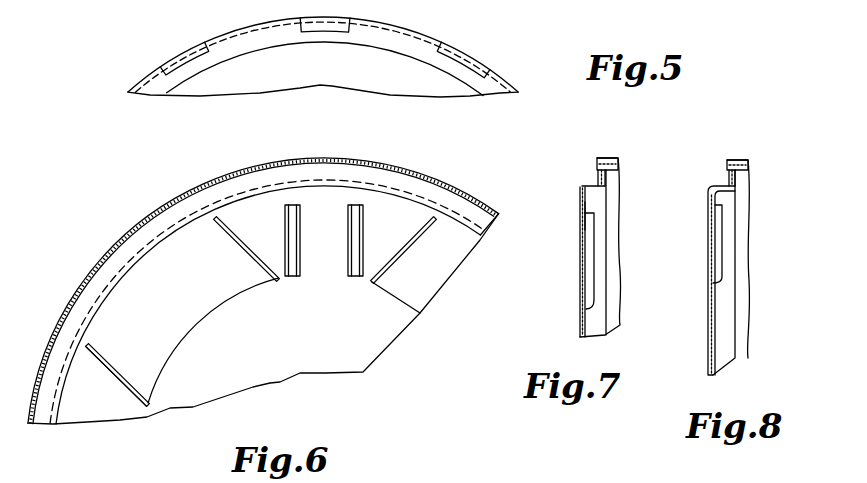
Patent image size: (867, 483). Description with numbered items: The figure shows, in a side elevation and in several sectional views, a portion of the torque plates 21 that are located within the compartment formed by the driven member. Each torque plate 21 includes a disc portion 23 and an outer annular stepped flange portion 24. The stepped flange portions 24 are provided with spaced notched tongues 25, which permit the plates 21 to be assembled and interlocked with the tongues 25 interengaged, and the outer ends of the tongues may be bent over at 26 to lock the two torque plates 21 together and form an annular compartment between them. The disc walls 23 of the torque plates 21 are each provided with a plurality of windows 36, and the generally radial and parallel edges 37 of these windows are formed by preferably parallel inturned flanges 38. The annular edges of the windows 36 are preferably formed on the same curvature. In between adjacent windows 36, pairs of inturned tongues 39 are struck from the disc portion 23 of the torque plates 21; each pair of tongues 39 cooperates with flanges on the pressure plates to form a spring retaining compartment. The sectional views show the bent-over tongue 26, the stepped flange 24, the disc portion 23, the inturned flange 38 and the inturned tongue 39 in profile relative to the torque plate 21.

In FIG. 5, the torque plate 21 is at (392, 95).
In FIG. 6, the torque plate 21 is at (202, 398).
In FIG. 7, the torque plate 21 is at (622, 243).
In FIG. 8, the torque plate 21 is at (750, 247).
In FIG. 5, the disc portion 23 is at (268, 78).
In FIG. 7, the disc portion 23 is at (580, 332).
In FIG. 8, the disc portion 23 is at (708, 342).
In FIG. 5, the outer annular stepped flange portion 24 is at (223, 60).
In FIG. 6, the outer annular stepped flange portion 24 is at (407, 200).
In FIG. 7, the outer annular stepped flange portion 24 is at (595, 176).
In FIG. 5, the notched tongue 25 is at (263, 20).
In FIG. 6, the notched tongue 25 is at (176, 195).
In FIG. 7, the notched tongue 25 is at (613, 158).
In FIG. 8, the notched tongue 25 is at (742, 160).
In FIG. 5, the bent-over end of tongue 26 is at (333, 26).
In FIG. 7, the bent-over end of tongue 26 is at (597, 166).
In FIG. 8, the bent-over end of tongue 26 is at (727, 168).
In FIG. 6, the window 36 is at (113, 302).
In FIG. 7, the window 36 is at (583, 202).
In FIG. 6, the window edge 37 is at (231, 240).
In FIG. 6, the inturned flange 38 is at (134, 398).
In FIG. 7, the inturned flange 38 is at (590, 315).
In FIG. 6, the inturned tongue 39 is at (352, 248).
In FIG. 8, the inturned tongue 39 is at (717, 279).